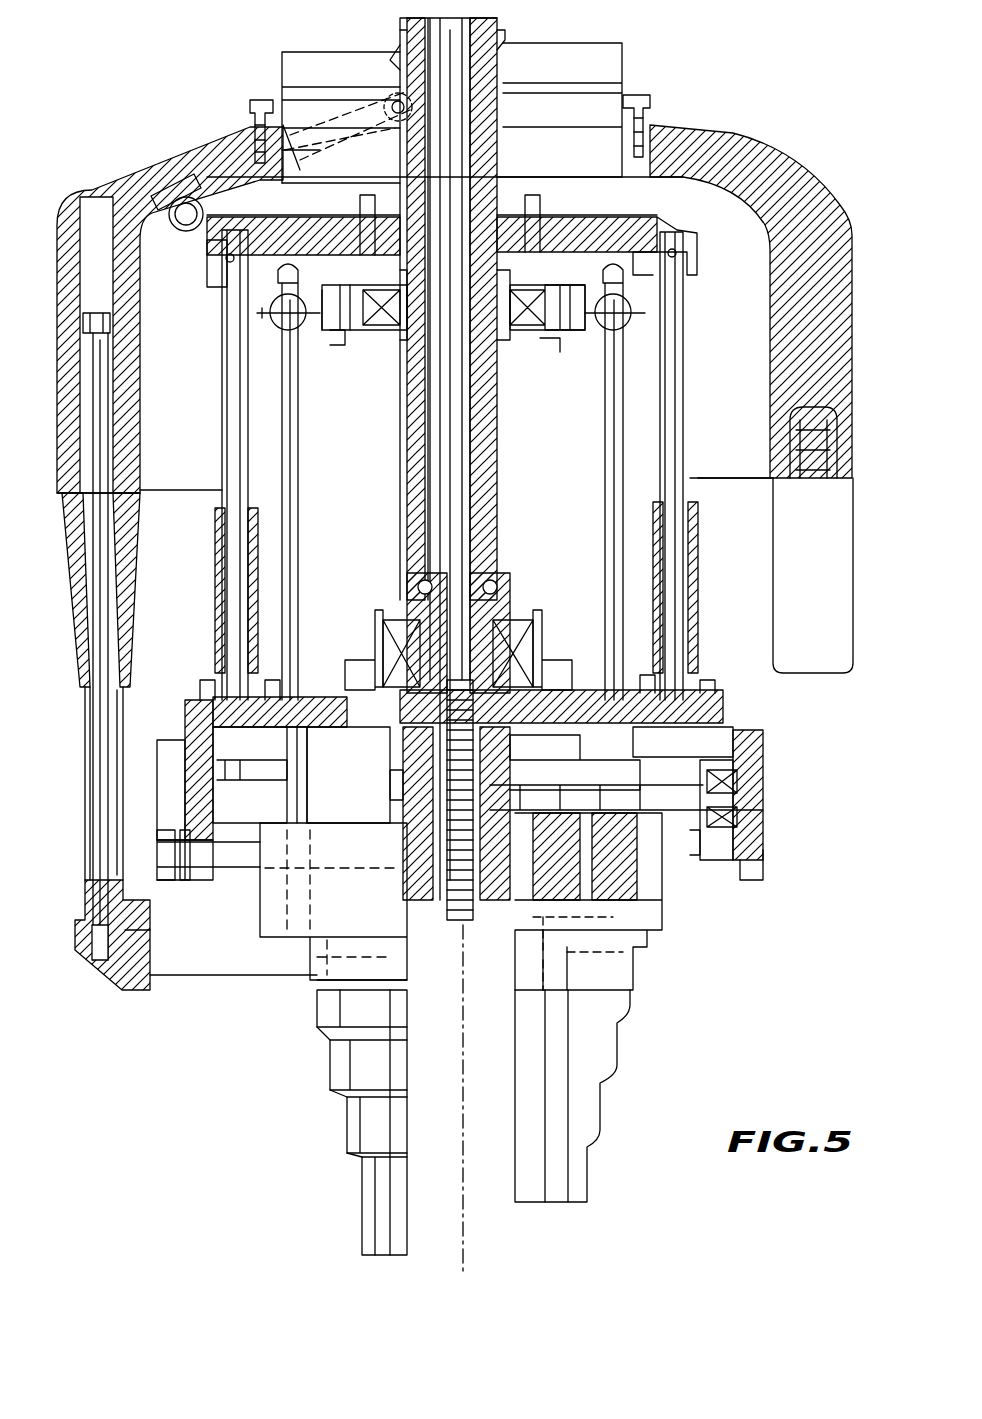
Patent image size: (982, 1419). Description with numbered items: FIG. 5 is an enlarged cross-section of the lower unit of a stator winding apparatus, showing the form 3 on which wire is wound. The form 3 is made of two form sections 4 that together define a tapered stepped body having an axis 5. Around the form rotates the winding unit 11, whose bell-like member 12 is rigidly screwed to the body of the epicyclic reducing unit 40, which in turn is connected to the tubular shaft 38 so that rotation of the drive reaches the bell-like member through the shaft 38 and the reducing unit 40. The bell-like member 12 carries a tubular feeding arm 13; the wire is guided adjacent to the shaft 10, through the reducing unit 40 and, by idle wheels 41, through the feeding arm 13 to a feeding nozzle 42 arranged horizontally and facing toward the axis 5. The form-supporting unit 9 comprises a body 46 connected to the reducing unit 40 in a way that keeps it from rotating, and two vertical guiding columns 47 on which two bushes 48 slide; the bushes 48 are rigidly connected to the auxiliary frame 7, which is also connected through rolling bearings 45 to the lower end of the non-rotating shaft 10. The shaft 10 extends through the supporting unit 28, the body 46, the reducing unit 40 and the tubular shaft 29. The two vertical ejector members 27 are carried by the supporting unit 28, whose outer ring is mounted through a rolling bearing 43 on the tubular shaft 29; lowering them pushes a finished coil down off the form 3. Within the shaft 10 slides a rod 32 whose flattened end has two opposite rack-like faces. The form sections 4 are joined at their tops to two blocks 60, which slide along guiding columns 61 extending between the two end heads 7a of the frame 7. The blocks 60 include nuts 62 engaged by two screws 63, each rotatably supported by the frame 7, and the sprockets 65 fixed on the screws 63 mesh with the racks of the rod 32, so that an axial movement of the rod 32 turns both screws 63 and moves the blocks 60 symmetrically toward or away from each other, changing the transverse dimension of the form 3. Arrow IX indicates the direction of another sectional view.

The form 3 is at (610, 1138).
The form sections 4 is at (345, 1130).
The axis 5 is at (505, 1260).
The auxiliary frame 7 is at (590, 685).
The end heads 7a is at (200, 878).
The supporting unit 9 is at (695, 236).
The shaft 10 is at (498, 402).
The rotating unit 11 is at (85, 186).
The bell-like member 12 is at (135, 178).
The feeding arm 13 is at (90, 842).
The ejector members 27 is at (305, 470).
The supporting unit 28 is at (378, 340).
The tubular shaft 29 is at (508, 168).
The rod 32 is at (455, 935).
The tubular shaft 38 is at (505, 30).
The reducing unit 40 is at (626, 66).
The idle wheels 41 is at (395, 95).
The feeding nozzle 42 is at (135, 990).
The rolling bearing 43 is at (538, 332).
The rolling bearings 45 is at (385, 635).
The body 46 is at (545, 185).
The vertical guiding columns 47 is at (225, 405).
The bushes 48 is at (213, 580).
The blocks 60 is at (330, 765).
The guiding columns 61 is at (245, 862).
The nuts 62 is at (620, 870).
The screws 63 is at (215, 760).
The sprockets 65 is at (398, 772).
The section indicator IX is at (672, 872).